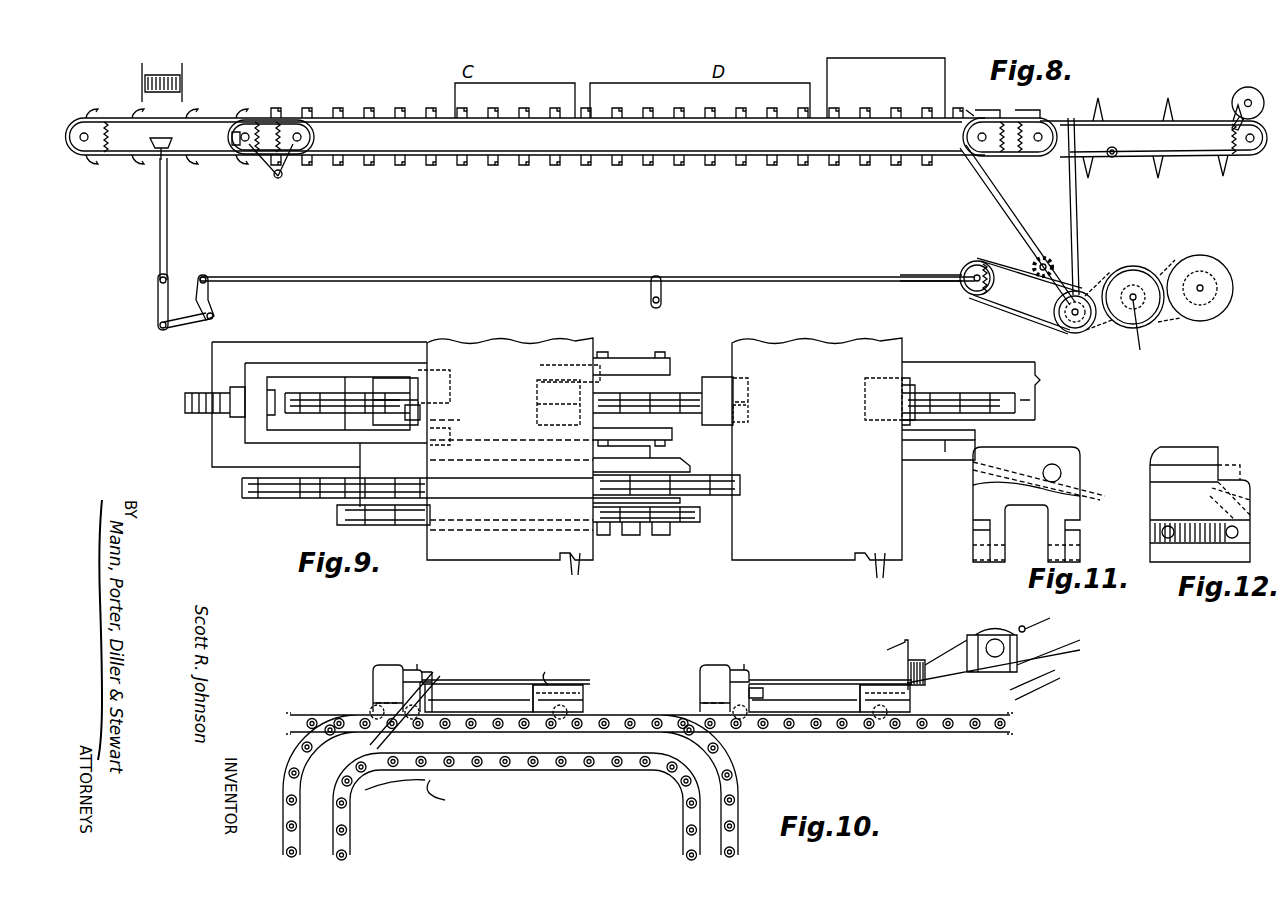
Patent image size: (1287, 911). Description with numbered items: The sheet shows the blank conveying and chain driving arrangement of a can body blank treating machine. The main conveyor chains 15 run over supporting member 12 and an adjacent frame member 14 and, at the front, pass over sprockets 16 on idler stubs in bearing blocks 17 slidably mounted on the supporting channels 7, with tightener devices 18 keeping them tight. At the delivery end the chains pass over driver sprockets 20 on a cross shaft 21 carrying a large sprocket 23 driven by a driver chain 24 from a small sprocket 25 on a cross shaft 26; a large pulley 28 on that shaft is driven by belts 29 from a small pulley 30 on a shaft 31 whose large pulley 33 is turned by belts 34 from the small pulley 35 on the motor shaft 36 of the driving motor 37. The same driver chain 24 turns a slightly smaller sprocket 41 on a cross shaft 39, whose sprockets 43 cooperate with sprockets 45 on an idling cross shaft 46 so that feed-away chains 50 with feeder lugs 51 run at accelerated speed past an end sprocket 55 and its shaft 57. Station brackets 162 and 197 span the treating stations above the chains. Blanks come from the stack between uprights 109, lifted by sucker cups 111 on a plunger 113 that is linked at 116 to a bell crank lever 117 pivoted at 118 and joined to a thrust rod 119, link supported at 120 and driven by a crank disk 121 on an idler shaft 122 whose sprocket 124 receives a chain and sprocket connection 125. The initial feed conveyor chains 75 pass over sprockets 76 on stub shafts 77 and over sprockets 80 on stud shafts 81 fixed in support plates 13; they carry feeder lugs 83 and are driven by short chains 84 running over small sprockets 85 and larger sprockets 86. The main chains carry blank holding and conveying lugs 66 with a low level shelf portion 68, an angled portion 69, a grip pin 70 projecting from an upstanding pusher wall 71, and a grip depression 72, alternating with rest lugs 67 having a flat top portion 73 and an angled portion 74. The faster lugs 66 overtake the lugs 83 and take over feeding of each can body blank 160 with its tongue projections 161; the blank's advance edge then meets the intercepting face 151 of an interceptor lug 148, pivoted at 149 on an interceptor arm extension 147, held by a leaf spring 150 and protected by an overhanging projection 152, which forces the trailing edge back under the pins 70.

In FIG. 9, the supporting channels 7 is at (215, 440).
In FIG. 9, the supporting member 12 is at (1028, 380).
In FIG. 9, the support plates 13 is at (628, 362).
In FIG. 9, the frame plate 14 is at (1030, 404).
In FIG. 8, the main conveyor chains 15 is at (735, 119).
In FIG. 9, the main conveyor chains 15 is at (680, 390).
In FIG. 10, the main conveyor chains 15 is at (945, 724).
In FIG. 8, the sprockets 16 is at (270, 158).
In FIG. 9, the sprockets 16 is at (358, 375).
In FIG. 9, the bearing blocks 17 is at (312, 362).
In FIG. 9, the tightener devices 18 is at (200, 413).
In FIG. 8, the driver sprockets 20 is at (1040, 146).
In FIG. 8, the cross shaft 21 is at (1036, 158).
In FIG. 8, the large sprocket 23 is at (1003, 163).
In FIG. 8, the driver chain 24 is at (1078, 248).
In FIG. 8, the small sprocket 25 is at (1080, 334).
In FIG. 8, the cross shaft 26 is at (1064, 330).
In FIG. 8, the large pulley 28 is at (1108, 320).
In FIG. 8, the belts 29 is at (1098, 272).
In FIG. 8, the small pulley 30 is at (1147, 276).
In FIG. 8, the shaft 31 is at (1136, 334).
In FIG. 8, the large pulley 33 is at (1150, 272).
In FIG. 8, the belts 34 is at (1172, 322).
In FIG. 8, the small pulley 35 is at (1205, 272).
In FIG. 8, the motor shaft 36 is at (1213, 275).
In FIG. 8, the driving motor 37 is at (1216, 306).
In FIG. 8, the cross shaft 39 is at (978, 146).
In FIG. 8, the sprocket 41 is at (1012, 122).
In FIG. 8, the sprockets 43 is at (992, 156).
In FIG. 8, the sprockets 45 is at (1240, 145).
In FIG. 8, the cross shaft 46 is at (1248, 156).
In FIG. 8, the feed-away chains 50 is at (1194, 121).
In FIG. 8, the feeder lugs 51 is at (1168, 108).
In FIG. 8, the sprocket 55 is at (1236, 96).
In FIG. 8, the shaft 57 is at (1250, 156).
In FIG. 8, the blank holding and conveying lugs 66 is at (426, 110).
In FIG. 9, the blank holding and conveying lugs 66 is at (396, 376).
In FIG. 11, the blank holding and conveying lugs 66 is at (973, 505).
In FIG. 12, the blank holding and conveying lugs 66 is at (1158, 494).
In FIG. 10, the blank holding and conveying lugs 66 is at (373, 672).
In FIG. 8, the rest lug 67 is at (384, 166).
In FIG. 9, the rest lug 67 is at (528, 405).
In FIG. 10, the rest lug 67 is at (553, 685).
In FIG. 9, the low level shelf portion 68 is at (430, 428).
In FIG. 11, the low level shelf portion 68 is at (975, 482).
In FIG. 12, the low level shelf portion 68 is at (1249, 478).
In FIG. 10, the low level shelf portion 68 is at (758, 688).
In FIG. 11, the laterally and downwardly angled portion 69 is at (1070, 505).
In FIG. 12, the laterally and downwardly angled portion 69 is at (1225, 490).
In FIG. 9, the grip pin 70 is at (428, 410).
In FIG. 11, the grip pin 70 is at (1060, 472).
In FIG. 12, the grip pin 70 is at (1228, 465).
In FIG. 10, the grip pin 70 is at (412, 668).
In FIG. 9, the upstanding pusher wall 71 is at (435, 380).
In FIG. 11, the upstanding pusher wall 71 is at (1030, 452).
In FIG. 12, the upstanding pusher wall 71 is at (1211, 463).
In FIG. 10, the upstanding pusher wall 71 is at (390, 664).
In FIG. 11, the grip depression 72 is at (1045, 500).
In FIG. 9, the flat top portion 73 is at (908, 380).
In FIG. 10, the flat top portion 73 is at (565, 685).
In FIG. 9, the outwardly and downwardly angled portion 74 is at (556, 425).
In FIG. 10, the outwardly and downwardly angled portion 74 is at (582, 685).
In FIG. 8, the initial feed conveyor chains 75 is at (134, 164).
In FIG. 9, the initial feed conveyor chains 75 is at (556, 372).
In FIG. 10, the initial feed conveyor chains 75 is at (325, 714).
In FIG. 8, the sprockets 76 is at (97, 126).
In FIG. 8, the stub shafts 77 is at (88, 163).
In FIG. 8, the sprockets 80 is at (284, 170).
In FIG. 9, the sprockets 80 is at (670, 505).
In FIG. 10, the sprockets 80 is at (712, 770).
In FIG. 8, the stud shafts 81 is at (305, 121).
In FIG. 9, the feeder lugs 83 is at (438, 485).
In FIG. 10, the feeder lugs 83 is at (440, 678).
In FIG. 8, the short chains 84 is at (272, 123).
In FIG. 9, the short chains 84 is at (645, 535).
In FIG. 10, the short chains 84 is at (528, 768).
In FIG. 8, the small sprockets 85 is at (244, 156).
In FIG. 10, the small sprockets 85 is at (450, 772).
In FIG. 8, the sprockets 86 is at (304, 136).
In FIG. 10, the sprockets 86 is at (572, 775).
In FIG. 8, the stack confining and supporting uprights 109 is at (142, 72).
In FIG. 8, the sucker cups 111 is at (170, 142).
In FIG. 8, the plunger 113 is at (158, 250).
In FIG. 8, the link connection 116 is at (156, 302).
In FIG. 8, the bell crank lever 117 is at (212, 302).
In FIG. 8, the pivot 118 is at (214, 320).
In FIG. 8, the thrust rod 119 is at (620, 276).
In FIG. 8, the link support 120 is at (664, 294).
In FIG. 8, the crank disk 121 is at (960, 285).
In FIG. 8, the idler shaft 122 is at (972, 262).
In FIG. 8, the sprocket 124 is at (968, 296).
In FIG. 8, the chain and sprocket connection 125 is at (1020, 304).
In FIG. 10, the interceptor arm extension 147 is at (1038, 660).
In FIG. 10, the interceptor lug 148 is at (945, 652).
In FIG. 10, the pivotal connection 149 is at (1012, 672).
In FIG. 10, the leaf spring 150 is at (1000, 640).
In FIG. 10, the intercepting face 151 is at (900, 660).
In FIG. 10, the overhanging projection 152 is at (908, 640).
In FIG. 8, the can body blank 160 is at (172, 78).
In FIG. 9, the can body blank 160 is at (538, 560).
In FIG. 11, the can body blank 160 is at (1019, 474).
In FIG. 10, the can body blank 160 is at (532, 682).
In FIG. 9, the tongue projections 161 is at (570, 578).
In FIG. 8, the station C 162 is at (525, 91).
In FIG. 8, the station D 197 is at (647, 94).